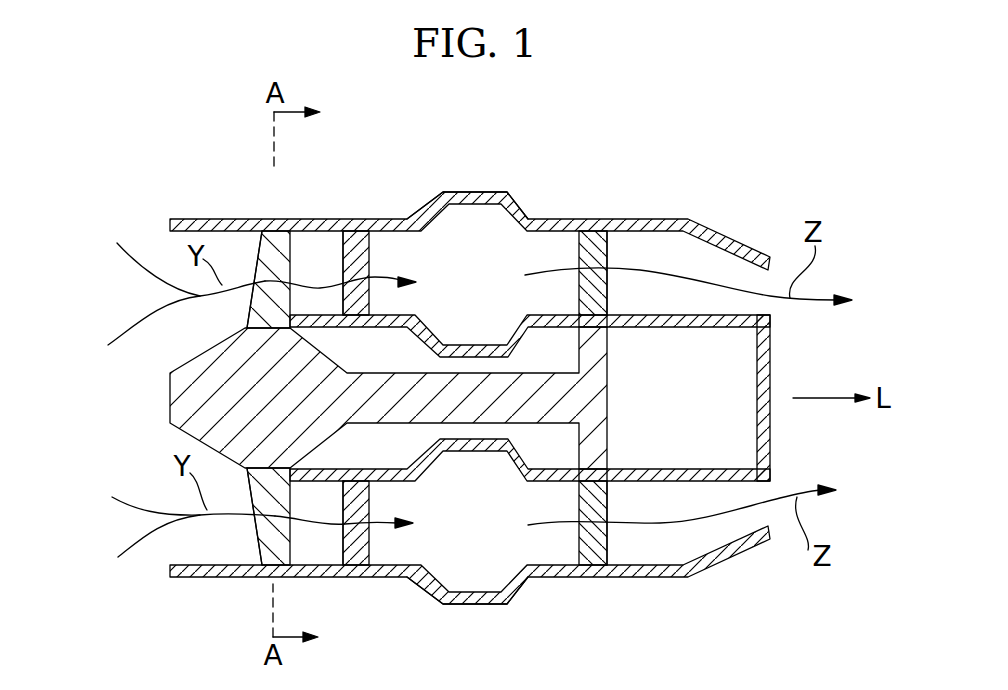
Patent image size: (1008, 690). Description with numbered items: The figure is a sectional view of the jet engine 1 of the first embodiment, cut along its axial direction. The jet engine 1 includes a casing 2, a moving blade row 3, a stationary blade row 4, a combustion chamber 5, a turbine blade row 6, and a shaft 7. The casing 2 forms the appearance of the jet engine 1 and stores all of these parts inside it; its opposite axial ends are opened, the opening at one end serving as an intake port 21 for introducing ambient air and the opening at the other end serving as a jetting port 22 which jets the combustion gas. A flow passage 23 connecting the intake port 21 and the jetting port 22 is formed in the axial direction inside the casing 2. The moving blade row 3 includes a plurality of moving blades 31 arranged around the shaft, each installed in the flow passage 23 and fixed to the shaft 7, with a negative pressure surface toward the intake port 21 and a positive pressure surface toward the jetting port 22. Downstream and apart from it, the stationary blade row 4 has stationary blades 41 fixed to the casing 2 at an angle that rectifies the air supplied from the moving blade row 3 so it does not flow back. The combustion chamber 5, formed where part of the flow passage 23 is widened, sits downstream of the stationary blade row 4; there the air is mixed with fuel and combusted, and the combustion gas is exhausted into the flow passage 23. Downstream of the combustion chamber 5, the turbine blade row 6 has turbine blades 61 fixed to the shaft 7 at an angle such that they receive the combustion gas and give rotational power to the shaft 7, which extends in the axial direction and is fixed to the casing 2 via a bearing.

The jet engine 1 is at (486, 378).
The casing 2 is at (392, 222).
The moving blade row 3 is at (256, 214).
The stationary blade row 4 is at (342, 214).
The combustion chamber 5 is at (480, 228).
The turbine blade row 6 is at (608, 214).
The shaft 7 is at (404, 410).
The intake port 21 is at (165, 352).
The jetting port 22 is at (756, 495).
The flow passage 23 is at (313, 250).
The moving blade 31 is at (260, 270).
The stationary blade 41 is at (364, 254).
The turbine blade 61 is at (588, 291).